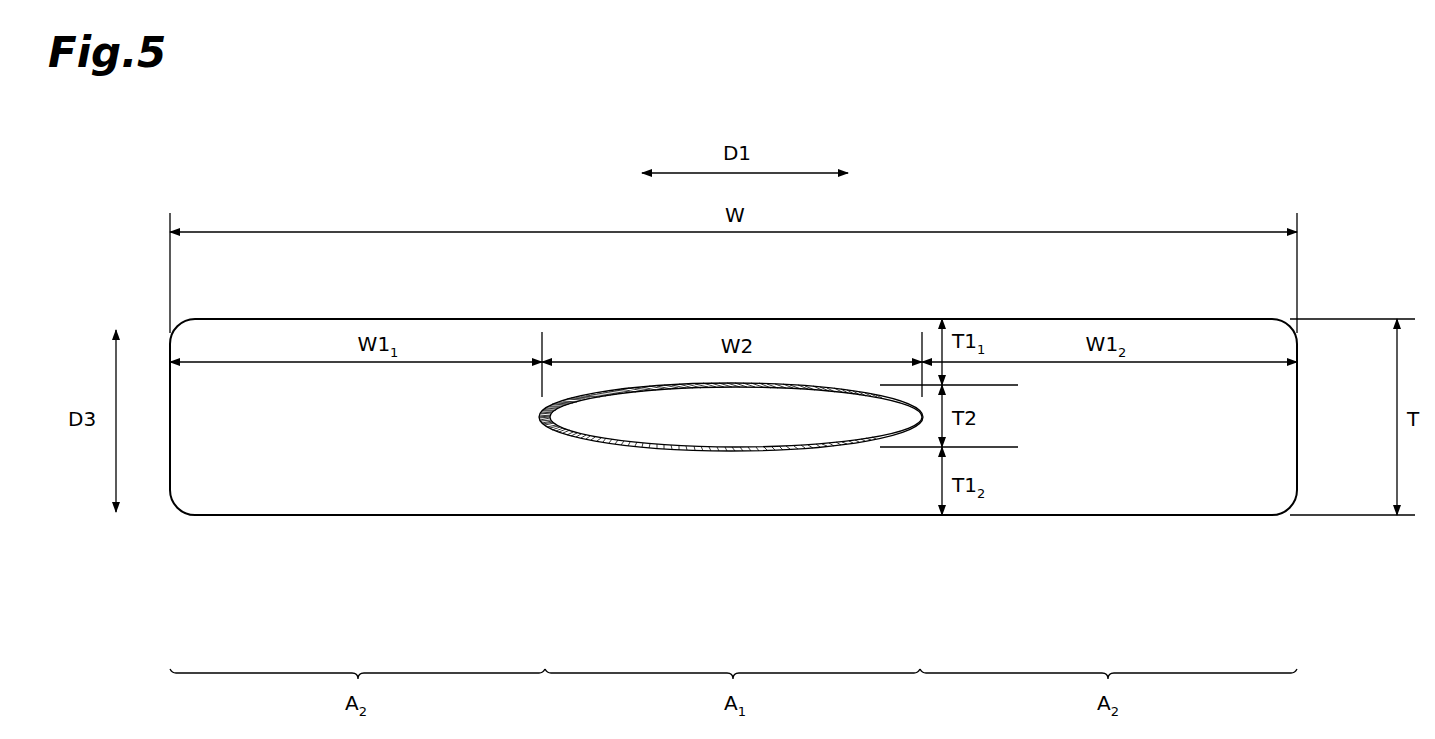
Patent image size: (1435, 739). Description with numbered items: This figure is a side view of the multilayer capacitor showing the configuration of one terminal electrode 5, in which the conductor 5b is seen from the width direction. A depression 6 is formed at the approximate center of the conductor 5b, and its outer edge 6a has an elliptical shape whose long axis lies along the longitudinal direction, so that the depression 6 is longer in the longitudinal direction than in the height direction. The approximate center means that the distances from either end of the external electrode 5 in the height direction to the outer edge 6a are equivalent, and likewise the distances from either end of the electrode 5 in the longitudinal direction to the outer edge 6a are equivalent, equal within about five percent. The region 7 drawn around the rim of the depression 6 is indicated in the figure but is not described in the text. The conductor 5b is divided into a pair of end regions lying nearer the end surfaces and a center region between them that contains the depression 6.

The terminal electrode 5 is at (1250, 519).
The conductor 5b is at (1078, 485).
The depression 6 is at (733, 418).
The outer edge 6a is at (602, 440).
The chamfered portion 7 is at (732, 378).